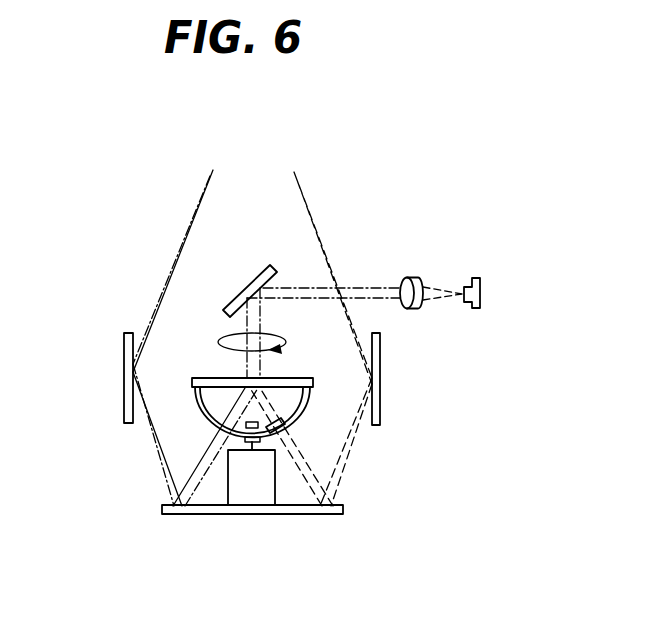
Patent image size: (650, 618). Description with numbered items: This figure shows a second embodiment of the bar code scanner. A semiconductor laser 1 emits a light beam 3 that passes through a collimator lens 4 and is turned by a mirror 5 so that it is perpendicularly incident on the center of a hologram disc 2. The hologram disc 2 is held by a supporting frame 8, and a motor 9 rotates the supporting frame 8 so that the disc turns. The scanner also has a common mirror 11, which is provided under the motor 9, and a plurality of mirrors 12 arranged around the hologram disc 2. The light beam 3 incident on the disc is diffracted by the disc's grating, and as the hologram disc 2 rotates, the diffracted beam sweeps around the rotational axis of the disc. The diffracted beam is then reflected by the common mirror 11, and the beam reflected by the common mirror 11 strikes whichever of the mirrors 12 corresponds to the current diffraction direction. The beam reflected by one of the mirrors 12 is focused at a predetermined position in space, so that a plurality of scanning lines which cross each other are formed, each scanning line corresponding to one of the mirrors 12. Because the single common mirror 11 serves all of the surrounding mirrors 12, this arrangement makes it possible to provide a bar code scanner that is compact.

The semiconductor laser 1 is at (473, 276).
The hologram disc 2 is at (210, 378).
The light beam 3 is at (346, 268).
The collimator lens 4 is at (415, 276).
The mirror 5 is at (267, 266).
The supporting frame 8 is at (210, 408).
The motor 9 is at (258, 483).
The common mirror 11 is at (217, 514).
The mirrors 12 is at (123, 358).